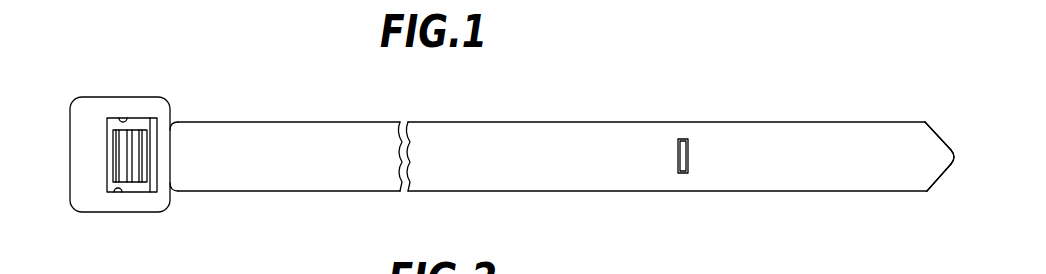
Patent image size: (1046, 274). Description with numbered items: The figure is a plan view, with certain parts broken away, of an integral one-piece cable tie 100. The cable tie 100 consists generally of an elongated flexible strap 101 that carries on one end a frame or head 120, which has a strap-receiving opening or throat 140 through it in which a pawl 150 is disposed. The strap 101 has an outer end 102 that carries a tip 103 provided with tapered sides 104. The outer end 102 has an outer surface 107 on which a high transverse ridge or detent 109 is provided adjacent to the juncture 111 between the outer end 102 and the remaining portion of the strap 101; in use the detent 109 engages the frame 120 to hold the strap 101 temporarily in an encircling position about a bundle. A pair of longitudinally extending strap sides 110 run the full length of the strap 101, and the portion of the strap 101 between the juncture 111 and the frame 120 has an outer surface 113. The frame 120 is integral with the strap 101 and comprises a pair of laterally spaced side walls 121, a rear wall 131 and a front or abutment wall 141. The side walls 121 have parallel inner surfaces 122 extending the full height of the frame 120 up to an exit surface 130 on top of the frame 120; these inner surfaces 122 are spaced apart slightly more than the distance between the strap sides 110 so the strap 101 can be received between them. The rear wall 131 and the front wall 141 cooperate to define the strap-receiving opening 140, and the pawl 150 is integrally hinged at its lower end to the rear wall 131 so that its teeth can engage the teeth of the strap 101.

The cable tie 100 is at (282, 44).
The strap 101 is at (438, 142).
The outer end 102 is at (907, 144).
The tip 103 is at (950, 173).
The tapered sides 104 is at (938, 132).
The outer surface 107 is at (840, 168).
The detent 109 is at (688, 139).
The strap sides 110 is at (303, 192).
The juncture 111 is at (648, 178).
The outer surface 113 is at (288, 165).
The frame 120 is at (88, 94).
The side walls 121 is at (114, 109).
The inner surfaces 122 is at (131, 151).
The exit surface 130 is at (93, 190).
The rear wall 131 is at (158, 156).
The strap-receiving opening 140 is at (101, 125).
The front wall 141 is at (87, 168).
The pawl 150 is at (169, 118).